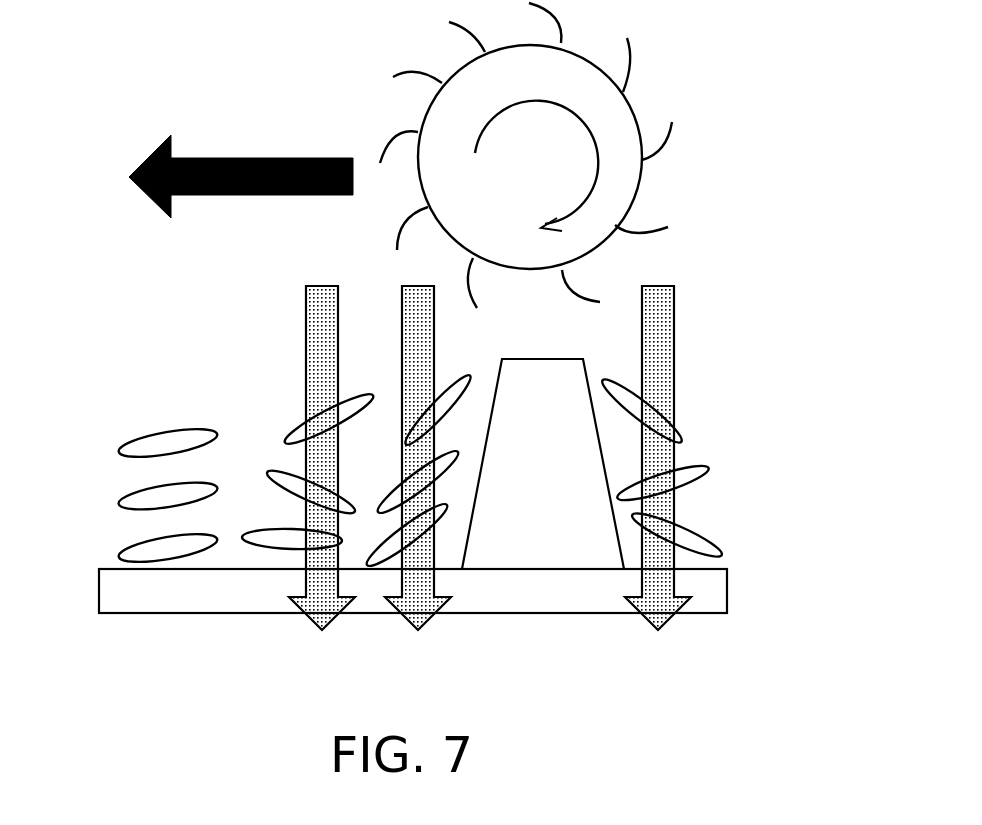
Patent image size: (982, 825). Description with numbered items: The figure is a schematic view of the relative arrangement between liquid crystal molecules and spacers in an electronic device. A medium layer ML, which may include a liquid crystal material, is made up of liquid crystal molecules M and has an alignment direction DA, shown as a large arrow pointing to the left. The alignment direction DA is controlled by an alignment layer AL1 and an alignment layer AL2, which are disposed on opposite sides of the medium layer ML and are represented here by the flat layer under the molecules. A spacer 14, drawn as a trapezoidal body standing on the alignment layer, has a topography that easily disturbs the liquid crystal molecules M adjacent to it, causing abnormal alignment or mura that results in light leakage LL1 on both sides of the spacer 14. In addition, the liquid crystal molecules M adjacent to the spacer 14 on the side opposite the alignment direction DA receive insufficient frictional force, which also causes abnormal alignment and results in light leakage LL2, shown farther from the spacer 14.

The spacer 14 is at (553, 550).
The light leakage LL1 is at (538, 479).
The light leakage LL2 is at (322, 479).
The alignment direction DA is at (225, 176).
The alignment layer AL1 is at (469, 590).
The alignment layer AL2 is at (713, 592).
The liquid crystal molecules M is at (376, 483).
The medium layer ML is at (137, 553).